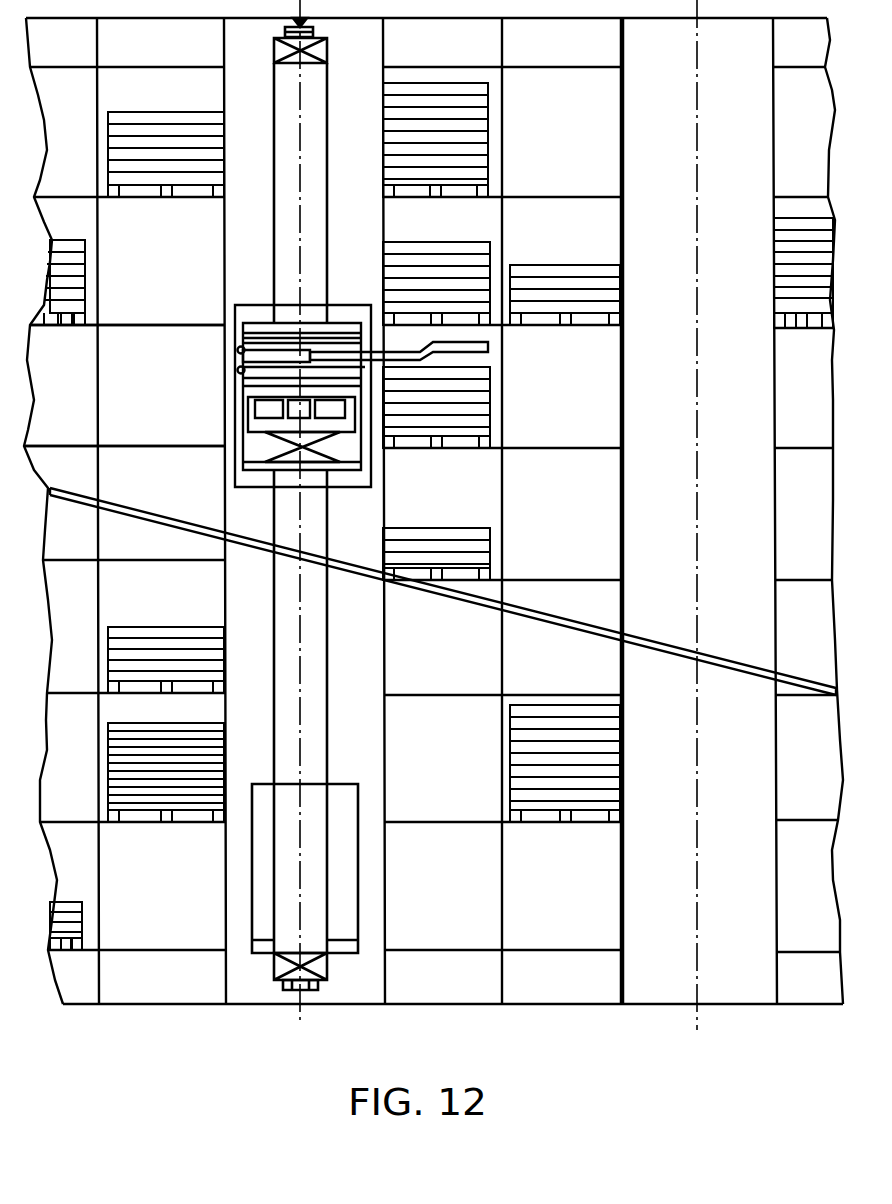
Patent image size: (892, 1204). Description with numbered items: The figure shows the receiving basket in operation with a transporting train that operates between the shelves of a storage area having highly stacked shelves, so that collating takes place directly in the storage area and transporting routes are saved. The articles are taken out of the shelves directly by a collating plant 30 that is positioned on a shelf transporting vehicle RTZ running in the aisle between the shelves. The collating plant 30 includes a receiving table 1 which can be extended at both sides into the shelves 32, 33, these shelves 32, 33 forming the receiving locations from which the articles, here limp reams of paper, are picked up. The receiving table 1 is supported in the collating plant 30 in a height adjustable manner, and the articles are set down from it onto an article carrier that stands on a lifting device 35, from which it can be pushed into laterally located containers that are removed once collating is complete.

The receiving table 1 is at (343, 333).
The collating plant 30 is at (233, 346).
The shelf 32 is at (169, 414).
The shelf 33 is at (447, 404).
The lifting device 35 is at (237, 457).
The return-to-zero reference position bracket RTZ is at (252, 865).